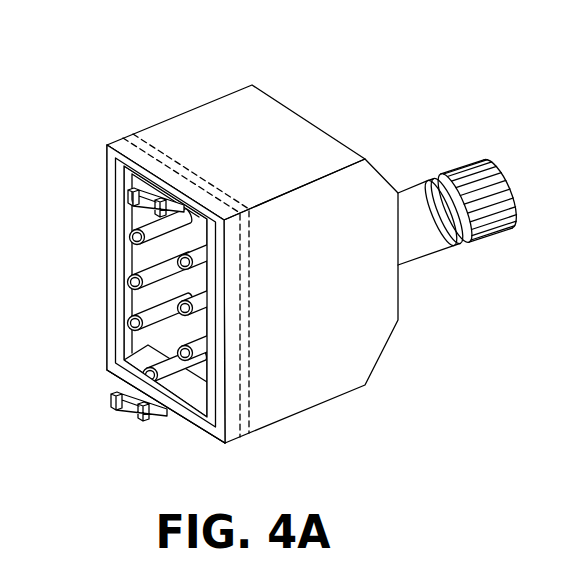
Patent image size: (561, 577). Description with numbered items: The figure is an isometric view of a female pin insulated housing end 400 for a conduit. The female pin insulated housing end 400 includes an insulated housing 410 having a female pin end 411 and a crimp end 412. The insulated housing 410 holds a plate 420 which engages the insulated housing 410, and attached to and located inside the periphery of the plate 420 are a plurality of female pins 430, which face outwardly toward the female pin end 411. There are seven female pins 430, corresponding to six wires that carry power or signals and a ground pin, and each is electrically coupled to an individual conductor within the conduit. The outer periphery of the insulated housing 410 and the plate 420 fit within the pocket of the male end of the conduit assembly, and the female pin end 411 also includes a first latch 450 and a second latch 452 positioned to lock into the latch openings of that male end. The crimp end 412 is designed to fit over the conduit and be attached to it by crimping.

The female pin insulated housing end 400 is at (285, 62).
The insulated housing 410 is at (363, 297).
The female pin end 411 is at (188, 413).
The crimp end 412 is at (443, 170).
The plate 420 is at (248, 367).
The female pins 430 is at (128, 322).
The first latch 450 is at (128, 195).
The second latch 452 is at (110, 397).